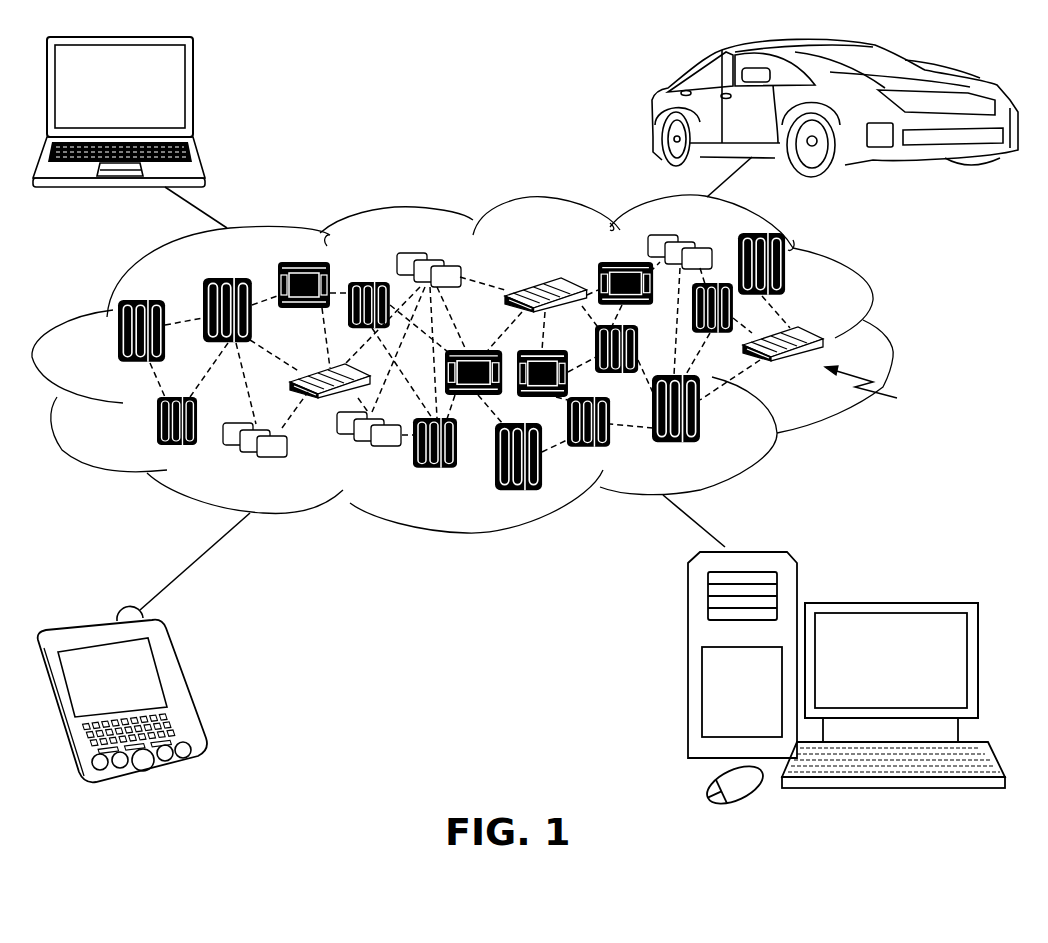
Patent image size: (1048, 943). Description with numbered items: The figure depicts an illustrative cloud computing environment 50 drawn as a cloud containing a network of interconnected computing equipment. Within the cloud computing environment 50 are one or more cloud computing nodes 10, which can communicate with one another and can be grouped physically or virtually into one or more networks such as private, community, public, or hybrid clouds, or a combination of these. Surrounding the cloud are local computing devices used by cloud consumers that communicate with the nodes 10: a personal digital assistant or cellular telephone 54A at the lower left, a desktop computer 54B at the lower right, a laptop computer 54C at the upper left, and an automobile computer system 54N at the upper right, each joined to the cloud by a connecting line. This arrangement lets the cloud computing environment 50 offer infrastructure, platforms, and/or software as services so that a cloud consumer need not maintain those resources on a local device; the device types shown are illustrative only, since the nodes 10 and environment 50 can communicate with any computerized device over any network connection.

The cloud computing nodes 10 is at (878, 389).
The cloud computing environment 50 is at (890, 340).
The personal digital assistant or cellular telephone 54A is at (183, 690).
The desktop computer 54B is at (890, 605).
The laptop computer 54C is at (195, 93).
The automobile computer system 54N is at (655, 110).